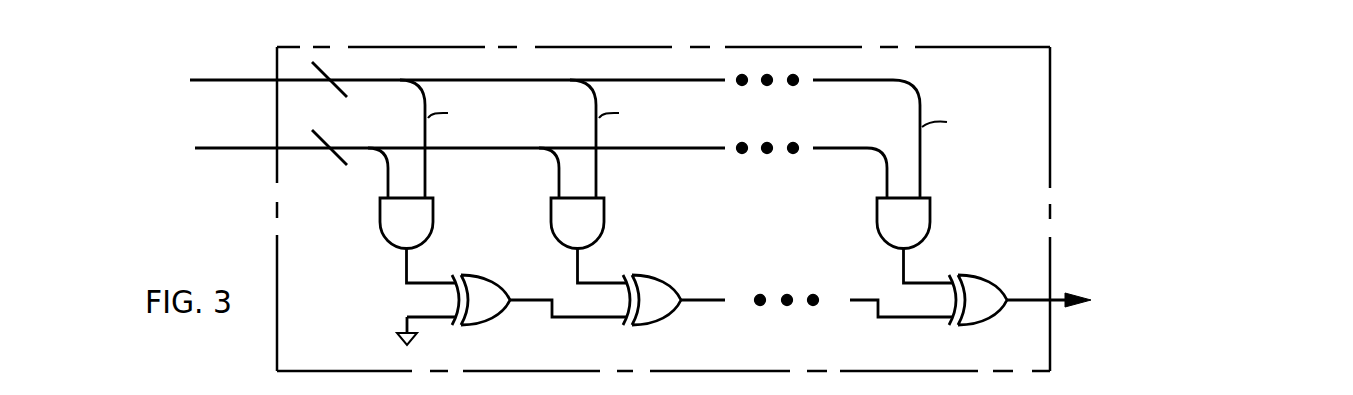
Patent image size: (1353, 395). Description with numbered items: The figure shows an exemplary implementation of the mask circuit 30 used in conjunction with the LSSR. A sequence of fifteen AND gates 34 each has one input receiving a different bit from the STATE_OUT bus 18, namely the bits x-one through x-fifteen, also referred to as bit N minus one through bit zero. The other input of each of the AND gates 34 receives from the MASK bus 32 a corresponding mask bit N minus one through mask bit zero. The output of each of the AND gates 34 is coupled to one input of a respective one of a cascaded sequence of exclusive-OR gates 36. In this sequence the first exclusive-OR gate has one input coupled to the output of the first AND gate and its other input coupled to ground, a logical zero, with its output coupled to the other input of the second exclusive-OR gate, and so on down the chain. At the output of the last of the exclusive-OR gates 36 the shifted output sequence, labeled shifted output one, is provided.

The bus 18 is at (208, 80).
The mask circuit 30 is at (425, 26).
The bus 32 is at (252, 148).
The AND gates 34 is at (877, 218).
The exclusive-OR gates 36 is at (498, 314).